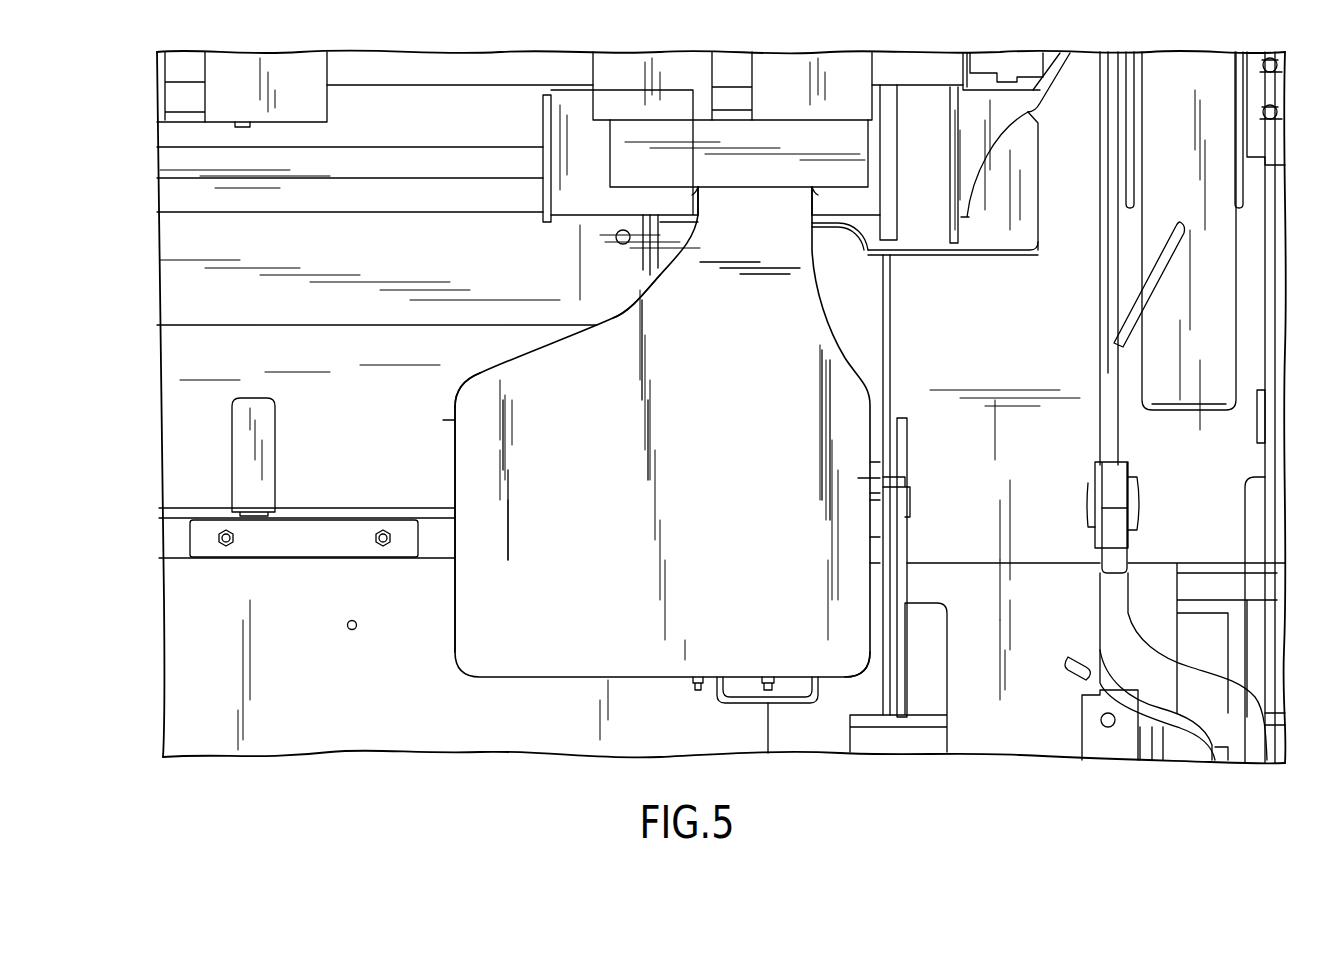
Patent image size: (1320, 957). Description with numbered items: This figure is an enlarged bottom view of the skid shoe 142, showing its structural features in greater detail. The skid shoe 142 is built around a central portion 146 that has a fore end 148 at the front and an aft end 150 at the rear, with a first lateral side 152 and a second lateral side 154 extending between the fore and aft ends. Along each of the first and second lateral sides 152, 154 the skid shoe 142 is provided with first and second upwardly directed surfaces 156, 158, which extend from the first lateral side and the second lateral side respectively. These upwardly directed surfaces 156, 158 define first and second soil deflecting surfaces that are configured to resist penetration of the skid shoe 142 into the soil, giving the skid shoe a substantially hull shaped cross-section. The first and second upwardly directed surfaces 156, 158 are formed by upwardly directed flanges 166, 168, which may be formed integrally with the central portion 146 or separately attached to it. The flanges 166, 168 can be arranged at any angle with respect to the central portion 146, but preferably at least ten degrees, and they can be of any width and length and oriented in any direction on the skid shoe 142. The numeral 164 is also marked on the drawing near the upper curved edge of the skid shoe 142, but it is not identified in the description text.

The skid shoe 142 is at (563, 342).
The central portion 146 is at (660, 522).
The fore end 148 is at (777, 235).
The aft end 150 is at (798, 650).
The first lateral side 152 is at (523, 493).
The second lateral side 154 is at (800, 447).
The first upwardly directed surface 156 is at (455, 448).
The second upwardly directed surface 158 is at (860, 478).
The curved upper edge 164 is at (613, 310).
The first upwardly directed flange 166 is at (447, 419).
The second upwardly directed flange 168 is at (875, 533).